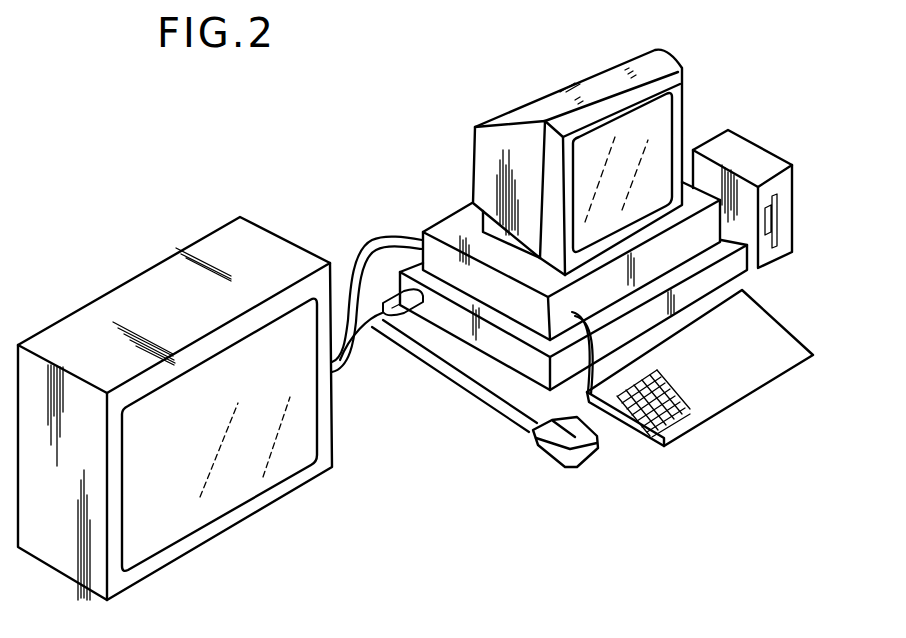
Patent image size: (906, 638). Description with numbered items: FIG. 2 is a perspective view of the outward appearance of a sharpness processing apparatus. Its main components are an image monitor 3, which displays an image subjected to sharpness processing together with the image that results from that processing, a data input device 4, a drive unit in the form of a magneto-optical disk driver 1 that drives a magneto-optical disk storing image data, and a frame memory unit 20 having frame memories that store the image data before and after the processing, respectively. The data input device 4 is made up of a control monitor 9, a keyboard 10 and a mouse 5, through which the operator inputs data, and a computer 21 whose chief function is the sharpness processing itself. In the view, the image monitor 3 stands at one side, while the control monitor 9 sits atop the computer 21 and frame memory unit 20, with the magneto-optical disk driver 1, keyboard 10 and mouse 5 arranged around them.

The magneto-optical disk driver 1 is at (744, 148).
The image monitor 3 is at (290, 242).
The data input device 4 is at (545, 158).
The mouse 5 is at (550, 446).
The control monitor 9 is at (530, 93).
The keyboard 10 is at (722, 393).
The frame memory unit 20 is at (752, 277).
The computer 21 is at (452, 217).